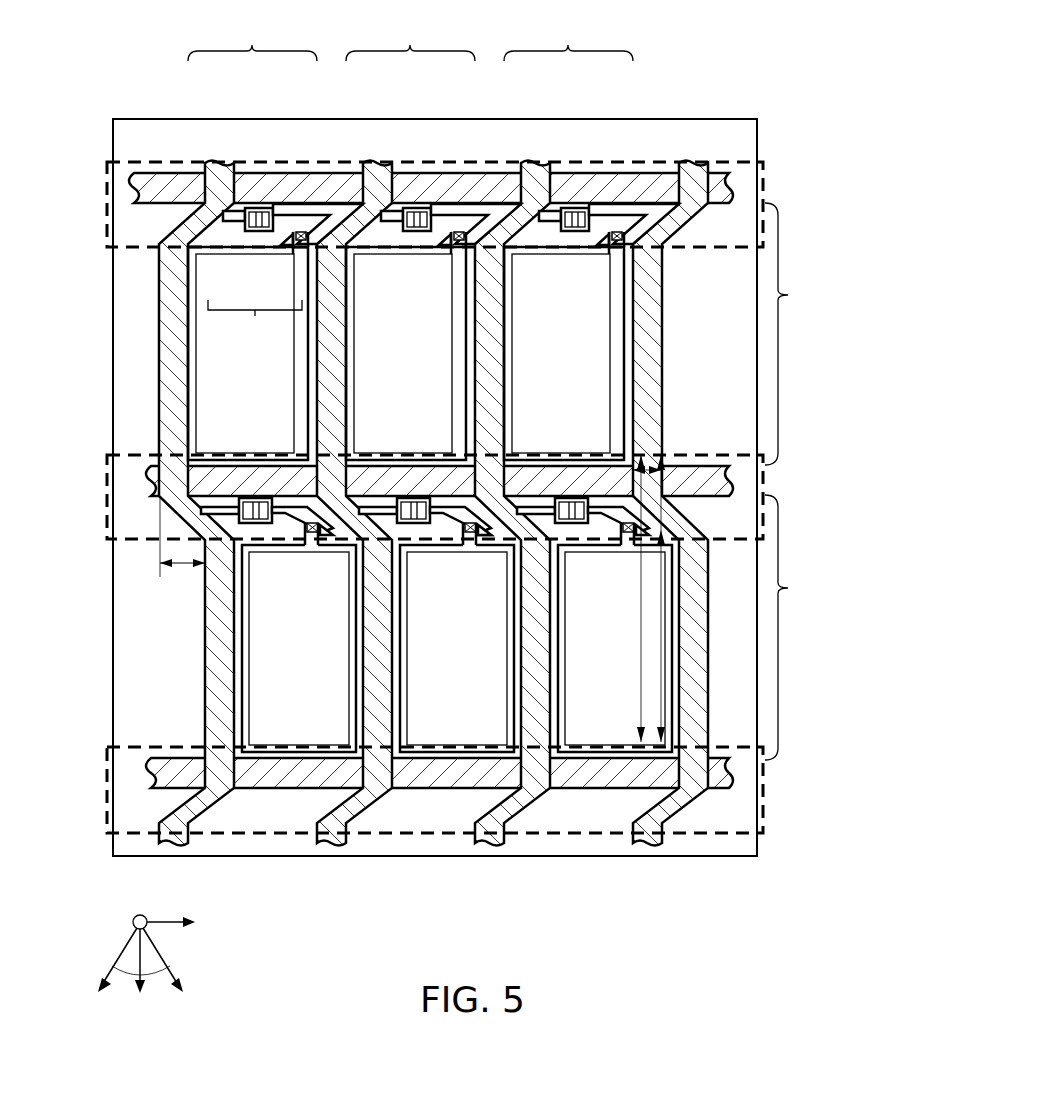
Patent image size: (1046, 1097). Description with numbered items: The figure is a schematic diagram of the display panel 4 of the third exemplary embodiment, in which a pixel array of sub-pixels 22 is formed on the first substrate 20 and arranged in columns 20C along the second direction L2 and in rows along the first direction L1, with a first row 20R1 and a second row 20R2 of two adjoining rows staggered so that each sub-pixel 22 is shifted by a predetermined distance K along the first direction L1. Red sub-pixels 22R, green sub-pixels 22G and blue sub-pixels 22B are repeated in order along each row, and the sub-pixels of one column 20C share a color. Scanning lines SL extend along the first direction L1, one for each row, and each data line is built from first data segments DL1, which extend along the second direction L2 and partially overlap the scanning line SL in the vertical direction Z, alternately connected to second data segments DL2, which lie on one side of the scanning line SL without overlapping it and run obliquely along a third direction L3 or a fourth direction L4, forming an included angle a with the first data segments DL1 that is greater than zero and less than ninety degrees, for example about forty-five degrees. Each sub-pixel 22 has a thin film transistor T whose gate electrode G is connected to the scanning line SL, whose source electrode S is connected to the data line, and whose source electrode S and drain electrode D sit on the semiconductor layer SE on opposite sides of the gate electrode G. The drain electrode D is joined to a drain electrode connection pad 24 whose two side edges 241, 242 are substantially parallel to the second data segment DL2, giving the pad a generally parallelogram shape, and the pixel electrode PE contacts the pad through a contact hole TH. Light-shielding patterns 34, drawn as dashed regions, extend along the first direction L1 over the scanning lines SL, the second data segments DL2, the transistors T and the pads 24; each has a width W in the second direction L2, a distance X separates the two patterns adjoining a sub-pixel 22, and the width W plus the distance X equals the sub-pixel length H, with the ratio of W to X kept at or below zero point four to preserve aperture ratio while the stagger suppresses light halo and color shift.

The display panel 4 is at (738, 46).
The first substrate 20 is at (318, 857).
The column 20C is at (410, 39).
The first row 20R1 is at (808, 334).
The second row 20R2 is at (808, 627).
The sub-pixel 22 is at (373, 499).
The red sub-pixel 22R is at (215, 499).
The green sub-pixel 22G is at (430, 499).
The blue sub-pixel 22B is at (588, 499).
The drain electrode connection pad 24 is at (285, 213).
The side edge 241 is at (466, 536).
The side edge 242 is at (483, 538).
The light-shielding pattern 34 is at (148, 245).
The scanning line SL is at (168, 190).
The first data segment DL1 is at (377, 187).
The second data segment DL2 is at (498, 228).
The contact hole TH is at (614, 226).
The pixel electrode PE is at (192, 342).
The thin film transistor T is at (255, 322).
The source electrode S is at (232, 224).
The semiconductor layer SE is at (258, 232).
The gate electrode G is at (282, 220).
The drain electrode D is at (304, 243).
The predetermined distance K is at (182, 537).
The width W is at (667, 493).
The length H is at (633, 598).
The distance X is at (656, 598).
The vertical direction Z is at (140, 908).
The first direction L1 is at (184, 924).
The second direction L2 is at (140, 974).
The third direction L3 is at (171, 973).
The fourth direction L4 is at (112, 974).
The included angle a is at (141, 962).